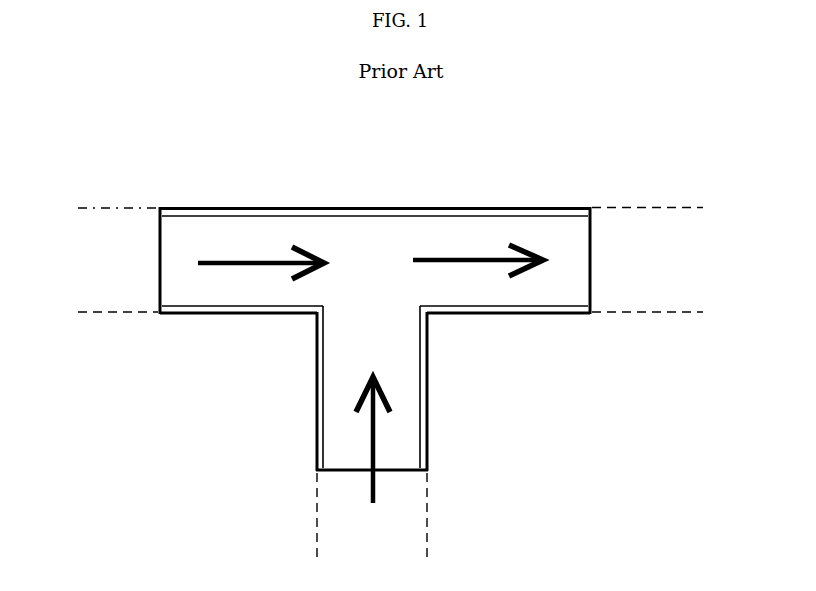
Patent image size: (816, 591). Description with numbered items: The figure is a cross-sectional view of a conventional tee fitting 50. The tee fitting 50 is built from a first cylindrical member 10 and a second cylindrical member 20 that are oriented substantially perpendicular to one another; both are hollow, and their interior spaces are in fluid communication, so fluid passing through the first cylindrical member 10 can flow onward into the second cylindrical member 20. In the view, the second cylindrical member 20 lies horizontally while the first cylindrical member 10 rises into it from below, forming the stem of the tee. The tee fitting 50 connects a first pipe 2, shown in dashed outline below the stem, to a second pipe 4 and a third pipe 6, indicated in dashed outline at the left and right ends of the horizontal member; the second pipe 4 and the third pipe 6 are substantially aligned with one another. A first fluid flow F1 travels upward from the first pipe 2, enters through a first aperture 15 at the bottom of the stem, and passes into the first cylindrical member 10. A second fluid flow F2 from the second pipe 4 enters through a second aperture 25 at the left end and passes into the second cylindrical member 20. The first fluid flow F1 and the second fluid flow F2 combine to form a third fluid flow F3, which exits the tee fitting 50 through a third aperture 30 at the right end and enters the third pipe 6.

The conventional tee fitting 50 is at (639, 162).
The second cylindrical member 20 is at (418, 228).
The second aperture 25 is at (172, 262).
The third aperture 30 is at (581, 258).
The first cylindrical member 10 is at (333, 381).
The first aperture 15 is at (397, 473).
The second pipe 4 is at (120, 298).
The third pipe 6 is at (631, 296).
The first pipe 2 is at (406, 540).
The first fluid flow F1 is at (364, 440).
The second fluid flow F2 is at (261, 254).
The third fluid flow F3 is at (478, 254).